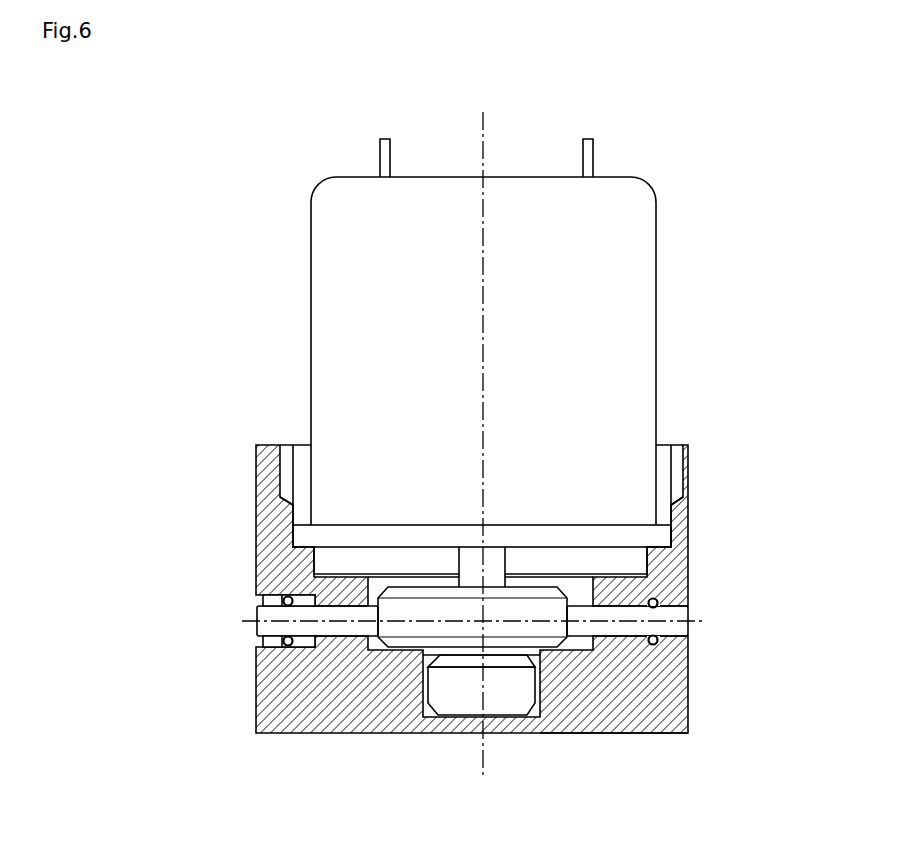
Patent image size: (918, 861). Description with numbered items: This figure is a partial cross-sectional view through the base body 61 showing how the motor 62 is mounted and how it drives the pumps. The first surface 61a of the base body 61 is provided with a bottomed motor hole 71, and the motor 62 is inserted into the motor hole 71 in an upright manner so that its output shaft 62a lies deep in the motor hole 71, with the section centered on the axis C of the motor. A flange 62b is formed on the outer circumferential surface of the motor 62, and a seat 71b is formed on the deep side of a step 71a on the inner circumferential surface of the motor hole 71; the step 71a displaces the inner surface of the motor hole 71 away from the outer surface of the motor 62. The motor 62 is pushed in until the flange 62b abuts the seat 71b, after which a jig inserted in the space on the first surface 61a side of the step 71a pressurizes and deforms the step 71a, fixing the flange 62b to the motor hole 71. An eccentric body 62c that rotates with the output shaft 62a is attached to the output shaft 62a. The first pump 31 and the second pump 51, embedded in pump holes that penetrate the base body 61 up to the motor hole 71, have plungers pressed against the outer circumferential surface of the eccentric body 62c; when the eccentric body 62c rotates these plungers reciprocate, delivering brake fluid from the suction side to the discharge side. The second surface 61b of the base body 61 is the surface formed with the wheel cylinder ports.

The central axis C is at (483, 132).
The motor 62 is at (352, 197).
The output shaft 62a is at (472, 570).
The flange 62b is at (302, 535).
The eccentric body 62c is at (542, 620).
The base body 61 is at (326, 717).
The first surface 61a is at (275, 443).
The second surface 61b is at (645, 740).
The motor hole 71 is at (302, 457).
The step 71a is at (283, 503).
The seat 71b is at (658, 550).
The first pump 31 is at (265, 628).
The second pump 51 is at (677, 630).